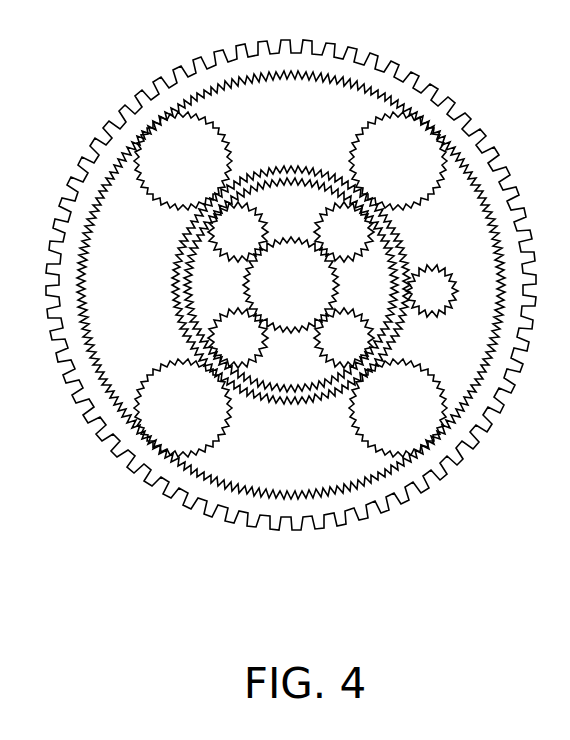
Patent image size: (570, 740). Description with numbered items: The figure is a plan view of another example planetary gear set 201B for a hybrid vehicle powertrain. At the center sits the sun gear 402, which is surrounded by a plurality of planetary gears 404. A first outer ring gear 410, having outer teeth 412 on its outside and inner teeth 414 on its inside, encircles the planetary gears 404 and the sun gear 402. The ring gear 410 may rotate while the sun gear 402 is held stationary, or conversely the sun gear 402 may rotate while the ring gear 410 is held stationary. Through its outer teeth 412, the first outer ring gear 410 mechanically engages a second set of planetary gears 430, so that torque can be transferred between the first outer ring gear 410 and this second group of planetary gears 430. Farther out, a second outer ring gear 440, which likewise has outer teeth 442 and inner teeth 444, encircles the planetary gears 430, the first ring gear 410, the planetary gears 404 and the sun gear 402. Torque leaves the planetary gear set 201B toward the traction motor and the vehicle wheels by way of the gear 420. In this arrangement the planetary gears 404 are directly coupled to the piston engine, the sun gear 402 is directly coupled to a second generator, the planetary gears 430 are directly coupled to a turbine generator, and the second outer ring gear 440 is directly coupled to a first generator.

The planetary gear set 201B is at (100, 55).
The sun gear 402 is at (274, 299).
The planetary gears 404 is at (221, 243).
The first outer ring gear 410 is at (268, 285).
The outer teeth 412 is at (177, 307).
The inner teeth 414 is at (190, 303).
The gear 420 is at (415, 302).
The second set of planetary gears 430 is at (166, 171).
The second outer ring gear 440 is at (291, 304).
The outer teeth 442 is at (313, 520).
The inner teeth 444 is at (296, 491).